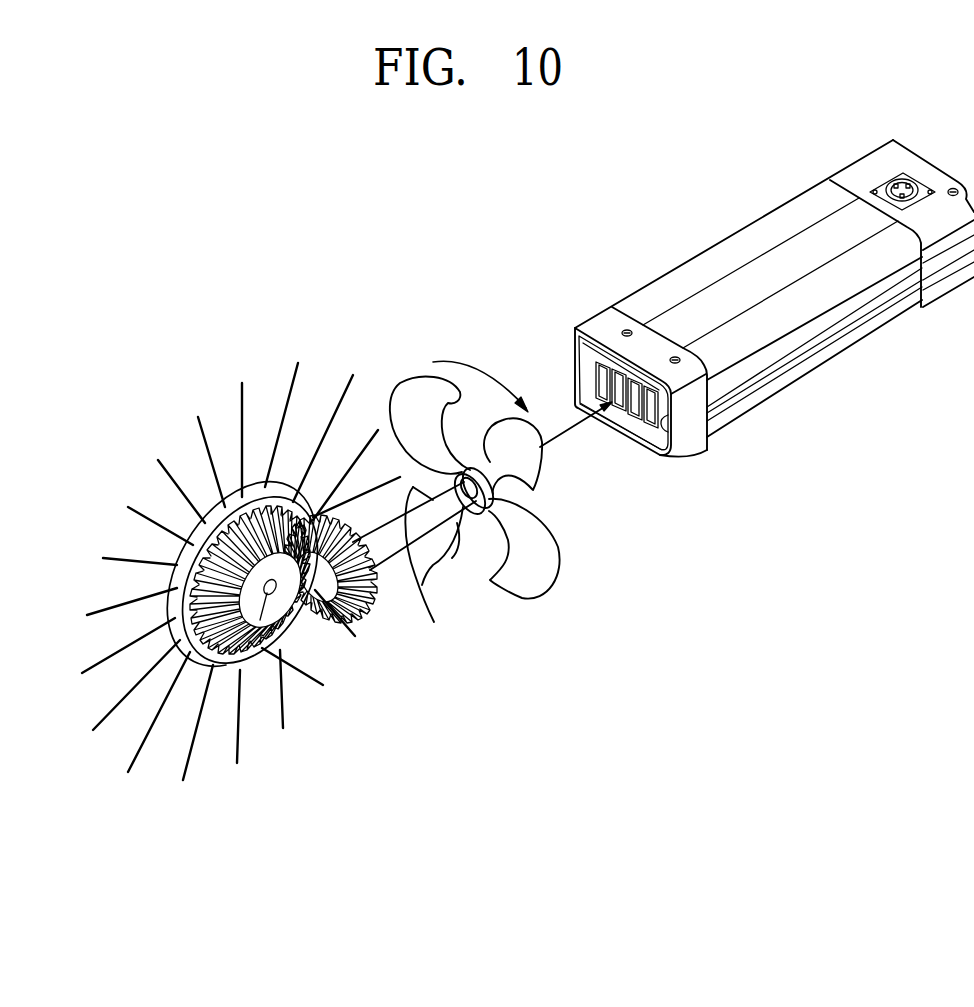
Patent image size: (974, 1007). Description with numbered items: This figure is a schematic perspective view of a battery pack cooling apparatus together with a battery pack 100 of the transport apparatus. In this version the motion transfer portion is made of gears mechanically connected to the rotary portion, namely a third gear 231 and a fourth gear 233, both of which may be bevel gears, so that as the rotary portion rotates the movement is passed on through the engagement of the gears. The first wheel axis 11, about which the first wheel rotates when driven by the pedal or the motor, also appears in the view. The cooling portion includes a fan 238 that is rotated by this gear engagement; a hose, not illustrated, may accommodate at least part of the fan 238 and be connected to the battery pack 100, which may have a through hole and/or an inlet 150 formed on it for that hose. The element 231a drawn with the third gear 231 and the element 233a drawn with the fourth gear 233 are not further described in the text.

The battery pack 100 is at (757, 323).
The inlet 150 is at (648, 427).
The fourth gear 233 is at (400, 548).
The pinion bevel gear 233a is at (347, 650).
The fan 238 is at (538, 582).
The third gear 231 is at (287, 635).
The brush plate 231a is at (221, 660).
The first wheel axis 11 is at (283, 650).